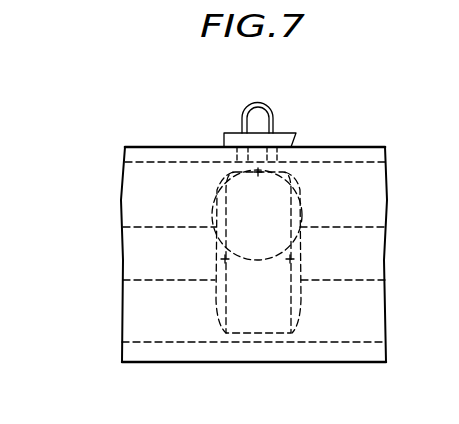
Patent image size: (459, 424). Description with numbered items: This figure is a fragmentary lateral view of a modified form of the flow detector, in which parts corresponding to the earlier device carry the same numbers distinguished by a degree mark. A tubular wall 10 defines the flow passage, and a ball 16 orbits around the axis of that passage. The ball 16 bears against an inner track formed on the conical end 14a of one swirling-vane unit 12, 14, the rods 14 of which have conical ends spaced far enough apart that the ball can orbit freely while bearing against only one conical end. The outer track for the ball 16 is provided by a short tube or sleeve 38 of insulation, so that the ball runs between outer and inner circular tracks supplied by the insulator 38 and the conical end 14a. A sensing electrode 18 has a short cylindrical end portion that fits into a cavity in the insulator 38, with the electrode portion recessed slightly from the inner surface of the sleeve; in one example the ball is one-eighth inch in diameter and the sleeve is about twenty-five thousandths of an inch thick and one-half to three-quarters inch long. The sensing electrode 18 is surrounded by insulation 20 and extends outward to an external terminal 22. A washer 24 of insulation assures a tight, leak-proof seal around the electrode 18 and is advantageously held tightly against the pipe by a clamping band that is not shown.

The tubular wall 10 is at (147, 148).
The swirling-vane unit 12 is at (130, 188).
The rods 14 is at (148, 263).
The conical end 14a is at (233, 272).
The ball 16 is at (254, 217).
The sensing electrode 18 is at (302, 193).
The insulation 20 is at (297, 131).
The external terminal 22 is at (265, 112).
The washer 24 is at (225, 137).
The sleeve 38 is at (262, 343).